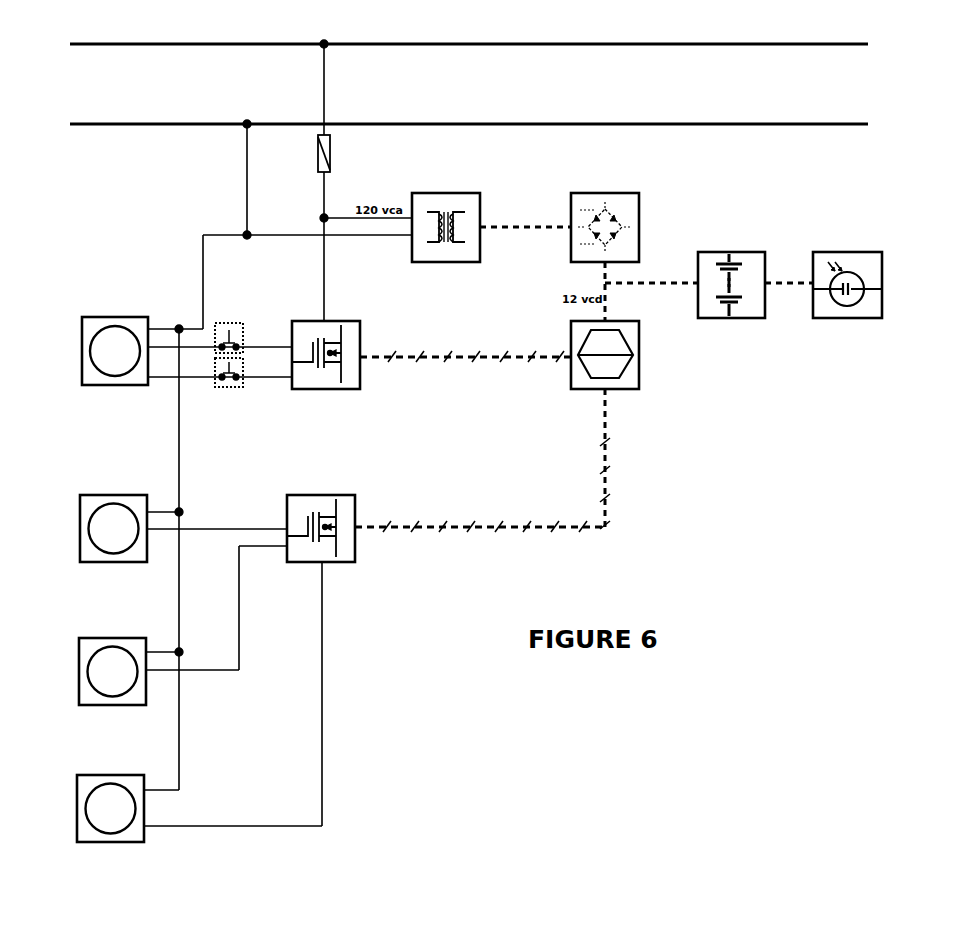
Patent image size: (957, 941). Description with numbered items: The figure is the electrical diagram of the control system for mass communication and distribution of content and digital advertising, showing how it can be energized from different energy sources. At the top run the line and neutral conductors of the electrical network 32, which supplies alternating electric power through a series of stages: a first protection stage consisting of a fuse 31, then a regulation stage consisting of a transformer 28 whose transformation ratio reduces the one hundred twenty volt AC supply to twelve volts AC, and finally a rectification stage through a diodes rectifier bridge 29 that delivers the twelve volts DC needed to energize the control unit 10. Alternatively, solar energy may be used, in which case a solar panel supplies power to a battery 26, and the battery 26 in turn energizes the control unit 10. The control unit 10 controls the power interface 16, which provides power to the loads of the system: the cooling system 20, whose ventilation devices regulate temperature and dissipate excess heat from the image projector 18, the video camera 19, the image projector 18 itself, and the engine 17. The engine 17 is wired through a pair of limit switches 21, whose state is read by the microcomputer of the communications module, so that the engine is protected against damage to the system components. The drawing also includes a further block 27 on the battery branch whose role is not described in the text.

The control unit 10 is at (499, 395).
The power interface 16 is at (422, 660).
The engine 17 is at (175, 364).
The image projector 18 is at (186, 821).
The video camera 19 is at (145, 683).
The cooling system 20 is at (167, 541).
The limit switches 21 is at (229, 384).
The battery 26 is at (685, 296).
The light sensor 27 is at (823, 296).
The transformer 28 is at (480, 214).
The diodes rectifier bridge 29 is at (591, 214).
The fuse 31 is at (306, 182).
The electrical network 32 is at (456, 85).